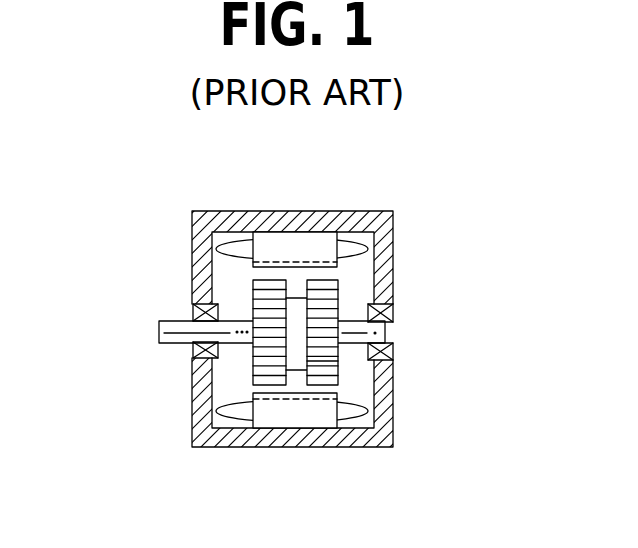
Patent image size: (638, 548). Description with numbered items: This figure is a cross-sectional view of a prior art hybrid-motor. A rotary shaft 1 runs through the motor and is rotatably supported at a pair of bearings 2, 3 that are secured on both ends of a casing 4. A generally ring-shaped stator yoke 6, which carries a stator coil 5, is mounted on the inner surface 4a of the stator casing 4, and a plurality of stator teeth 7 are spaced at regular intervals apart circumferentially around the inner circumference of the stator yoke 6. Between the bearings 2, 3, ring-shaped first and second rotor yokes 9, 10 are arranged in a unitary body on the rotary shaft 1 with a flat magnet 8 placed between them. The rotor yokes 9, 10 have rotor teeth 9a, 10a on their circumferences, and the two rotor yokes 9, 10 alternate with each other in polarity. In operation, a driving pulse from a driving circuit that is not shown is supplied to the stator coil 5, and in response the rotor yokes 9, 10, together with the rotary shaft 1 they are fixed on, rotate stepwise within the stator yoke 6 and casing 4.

The rotary shaft 1 is at (175, 343).
The bearing 2 is at (192, 313).
The bearing 3 is at (395, 309).
The casing 4 is at (360, 211).
The inner surface 4a is at (292, 243).
The stator coil 5 is at (237, 253).
The stator yoke 6 is at (317, 241).
The stator teeth 7 is at (335, 273).
The flat magnet 8 is at (385, 335).
The first rotor yoke 9 is at (262, 375).
The rotor teeth 9a is at (262, 352).
The second rotor yoke 10 is at (320, 384).
The rotor teeth 10a is at (338, 361).